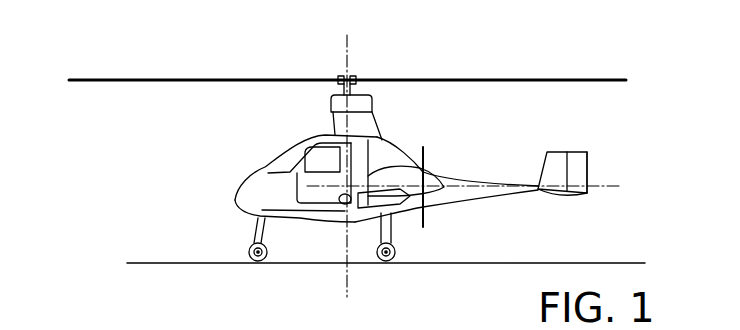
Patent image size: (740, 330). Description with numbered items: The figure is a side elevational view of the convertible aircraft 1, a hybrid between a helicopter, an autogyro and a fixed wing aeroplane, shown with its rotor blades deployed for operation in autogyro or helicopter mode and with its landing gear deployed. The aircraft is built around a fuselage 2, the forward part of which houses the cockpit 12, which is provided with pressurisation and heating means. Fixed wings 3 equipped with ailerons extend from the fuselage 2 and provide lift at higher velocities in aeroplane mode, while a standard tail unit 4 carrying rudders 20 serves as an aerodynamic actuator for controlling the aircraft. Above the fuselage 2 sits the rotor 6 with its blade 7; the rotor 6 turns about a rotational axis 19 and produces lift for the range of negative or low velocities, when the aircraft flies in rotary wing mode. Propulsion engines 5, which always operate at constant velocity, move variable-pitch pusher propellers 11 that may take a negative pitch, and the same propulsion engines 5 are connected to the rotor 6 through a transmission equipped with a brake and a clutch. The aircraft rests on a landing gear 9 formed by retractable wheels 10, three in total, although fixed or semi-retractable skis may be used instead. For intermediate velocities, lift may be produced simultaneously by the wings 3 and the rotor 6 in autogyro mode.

The convertible aircraft 1 is at (166, 38).
The fuselage 2 is at (424, 207).
The fixed wings 3 is at (368, 215).
The tail unit 4 is at (557, 152).
The propulsion engines 5 is at (403, 166).
The rotor 6 is at (372, 78).
The rotor blade 7 is at (347, 115).
The landing gear 9 is at (250, 232).
The retractable wheels 10 is at (244, 256).
The variable-pitch propellers 11 is at (429, 158).
The cockpit 12 is at (283, 162).
The rotational axis 19 is at (351, 50).
The rudders 20 is at (588, 175).